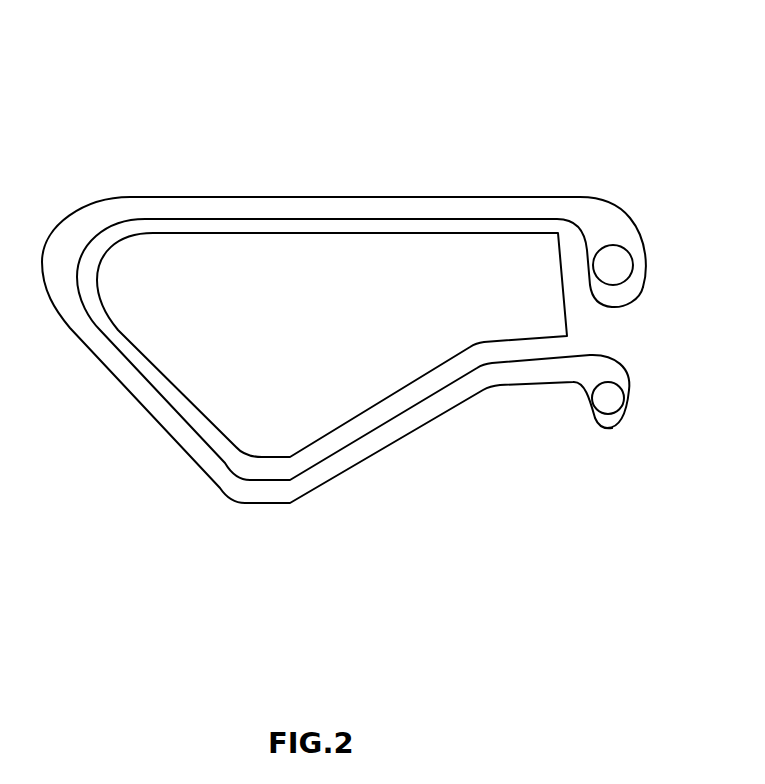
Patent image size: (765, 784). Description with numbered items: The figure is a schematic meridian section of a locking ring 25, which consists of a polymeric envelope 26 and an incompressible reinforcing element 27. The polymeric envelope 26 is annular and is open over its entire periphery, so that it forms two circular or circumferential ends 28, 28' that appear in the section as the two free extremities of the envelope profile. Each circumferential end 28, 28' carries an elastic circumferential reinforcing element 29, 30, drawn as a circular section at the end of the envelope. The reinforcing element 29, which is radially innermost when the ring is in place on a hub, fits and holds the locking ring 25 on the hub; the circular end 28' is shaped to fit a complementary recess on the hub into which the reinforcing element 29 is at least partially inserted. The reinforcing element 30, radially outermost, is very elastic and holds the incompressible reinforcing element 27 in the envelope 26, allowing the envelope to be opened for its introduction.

The locking ring 25 is at (249, 152).
The polymeric envelope 26 is at (462, 198).
The incompressible reinforcing element 27 is at (192, 358).
The circumferential end 28 is at (664, 310).
The circumferential end 28' is at (610, 451).
The elastic circumferential reinforcing element 29 is at (612, 401).
The elastic circumferential reinforcing element 30 is at (612, 262).